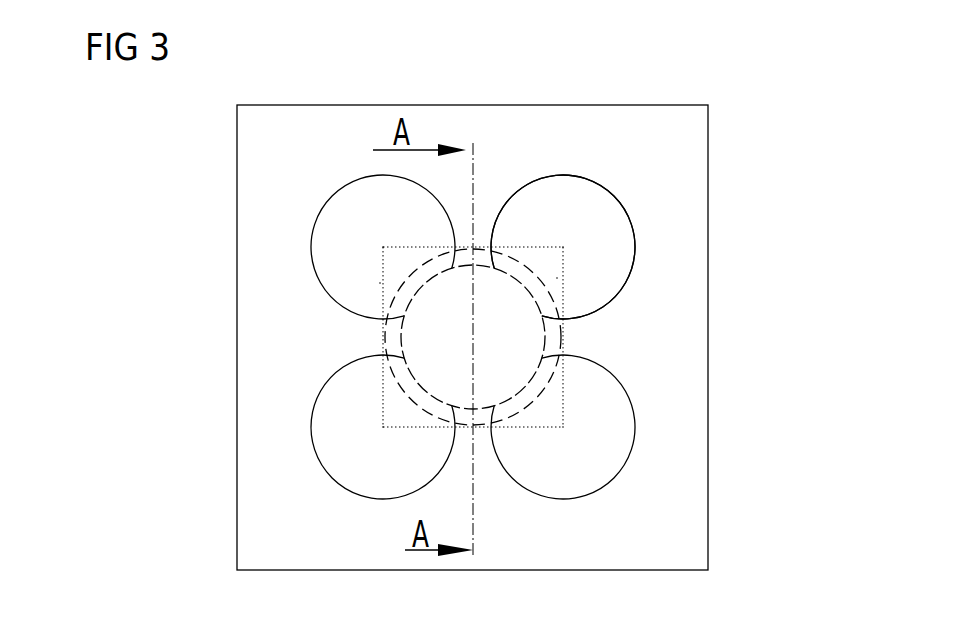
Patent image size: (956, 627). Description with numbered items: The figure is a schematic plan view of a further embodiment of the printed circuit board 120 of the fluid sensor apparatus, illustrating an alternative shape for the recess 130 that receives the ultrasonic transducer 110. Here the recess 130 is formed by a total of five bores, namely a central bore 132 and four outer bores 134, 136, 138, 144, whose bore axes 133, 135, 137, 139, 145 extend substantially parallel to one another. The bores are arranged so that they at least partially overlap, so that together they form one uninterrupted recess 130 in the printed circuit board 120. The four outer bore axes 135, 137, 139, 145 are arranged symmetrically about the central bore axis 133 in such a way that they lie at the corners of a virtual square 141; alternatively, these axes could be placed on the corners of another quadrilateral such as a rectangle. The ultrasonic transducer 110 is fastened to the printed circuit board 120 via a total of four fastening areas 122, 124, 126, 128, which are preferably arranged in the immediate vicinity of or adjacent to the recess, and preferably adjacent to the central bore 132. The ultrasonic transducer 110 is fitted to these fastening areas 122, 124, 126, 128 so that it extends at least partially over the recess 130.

The ultrasonic transducer 110 is at (557, 278).
The printed circuit board 120 is at (293, 137).
The fastening area 122 is at (482, 248).
The fastening area 124 is at (552, 338).
The fastening area 126 is at (457, 420).
The fastening area 128 is at (395, 333).
The recess 130 is at (630, 168).
The central bore 132 is at (510, 397).
The bore axis 133 is at (468, 333).
The bore 134 is at (323, 207).
The bore axis 135 is at (383, 248).
The bore 136 is at (620, 205).
The bore axis 137 is at (563, 247).
The bore 138 is at (620, 385).
The bore axis 139 is at (563, 426).
The virtual square 141 is at (380, 283).
The bore 144 is at (323, 387).
The bore axis 145 is at (383, 427).